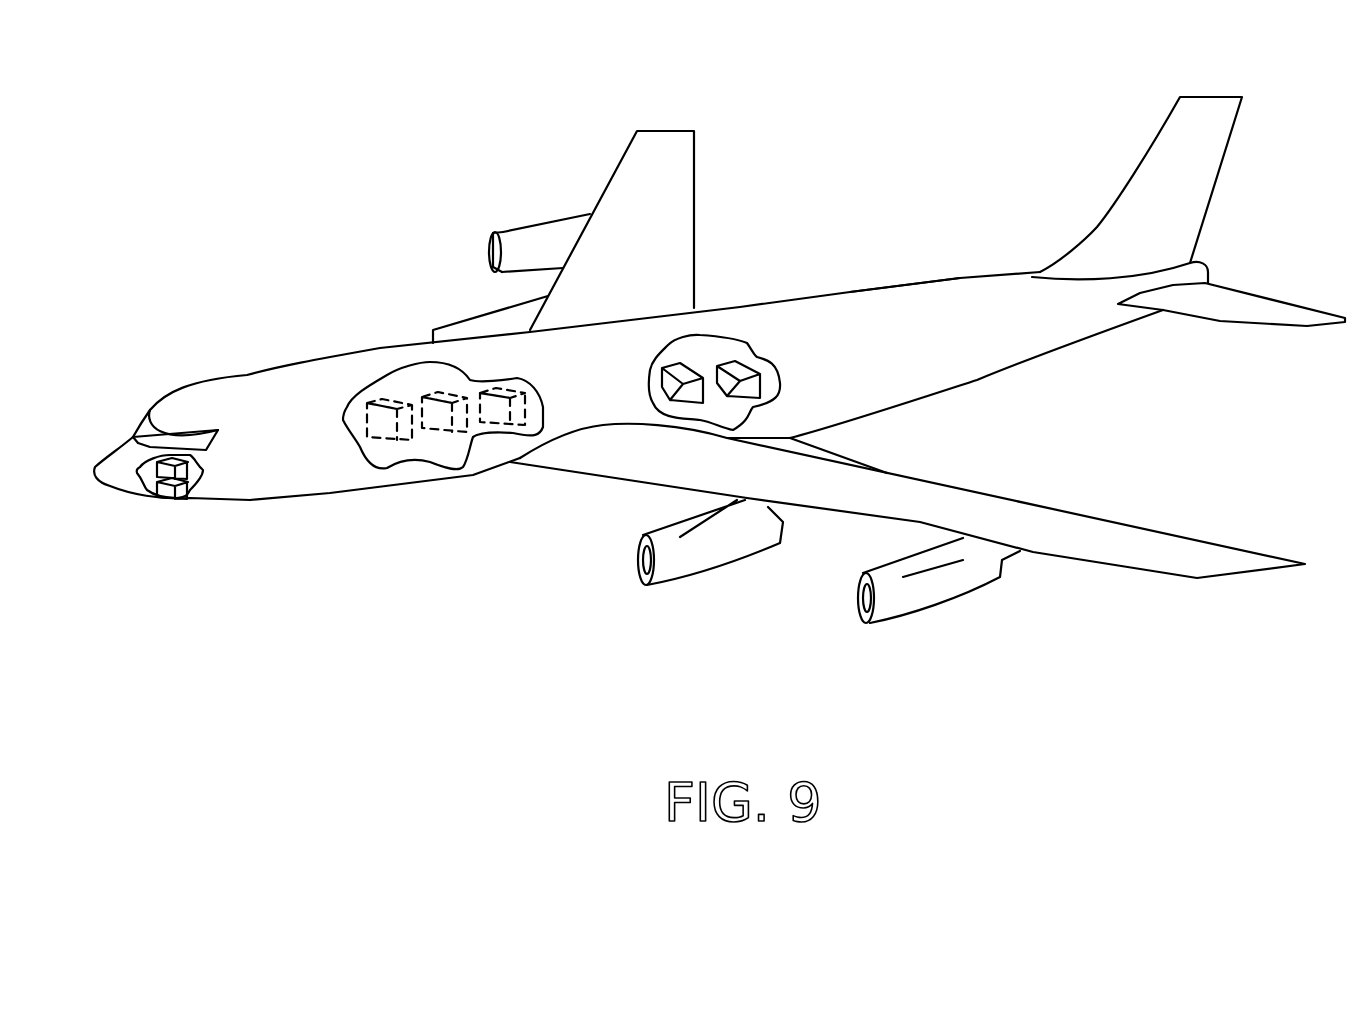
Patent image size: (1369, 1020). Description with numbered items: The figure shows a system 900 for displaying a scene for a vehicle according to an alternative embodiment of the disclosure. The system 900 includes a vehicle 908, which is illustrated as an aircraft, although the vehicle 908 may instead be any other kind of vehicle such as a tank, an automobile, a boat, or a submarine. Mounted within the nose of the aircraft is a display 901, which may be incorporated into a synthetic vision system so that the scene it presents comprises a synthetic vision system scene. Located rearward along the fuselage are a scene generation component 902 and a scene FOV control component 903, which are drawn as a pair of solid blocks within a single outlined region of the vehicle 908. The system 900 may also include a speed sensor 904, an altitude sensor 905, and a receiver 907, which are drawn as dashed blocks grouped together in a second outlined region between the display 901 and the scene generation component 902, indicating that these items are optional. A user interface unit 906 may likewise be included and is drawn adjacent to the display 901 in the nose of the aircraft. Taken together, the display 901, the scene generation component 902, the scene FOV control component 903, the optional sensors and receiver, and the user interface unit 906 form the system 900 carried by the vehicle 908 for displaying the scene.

The system 900 is at (270, 190).
The display 901 is at (170, 460).
The scene generation component 902 is at (677, 377).
The scene FOV control component 903 is at (733, 363).
The speed sensor 904 is at (387, 405).
The altitude sensor 905 is at (450, 432).
The user interface unit 906 is at (170, 499).
The receiver 907 is at (498, 388).
The vehicle 908 is at (950, 272).